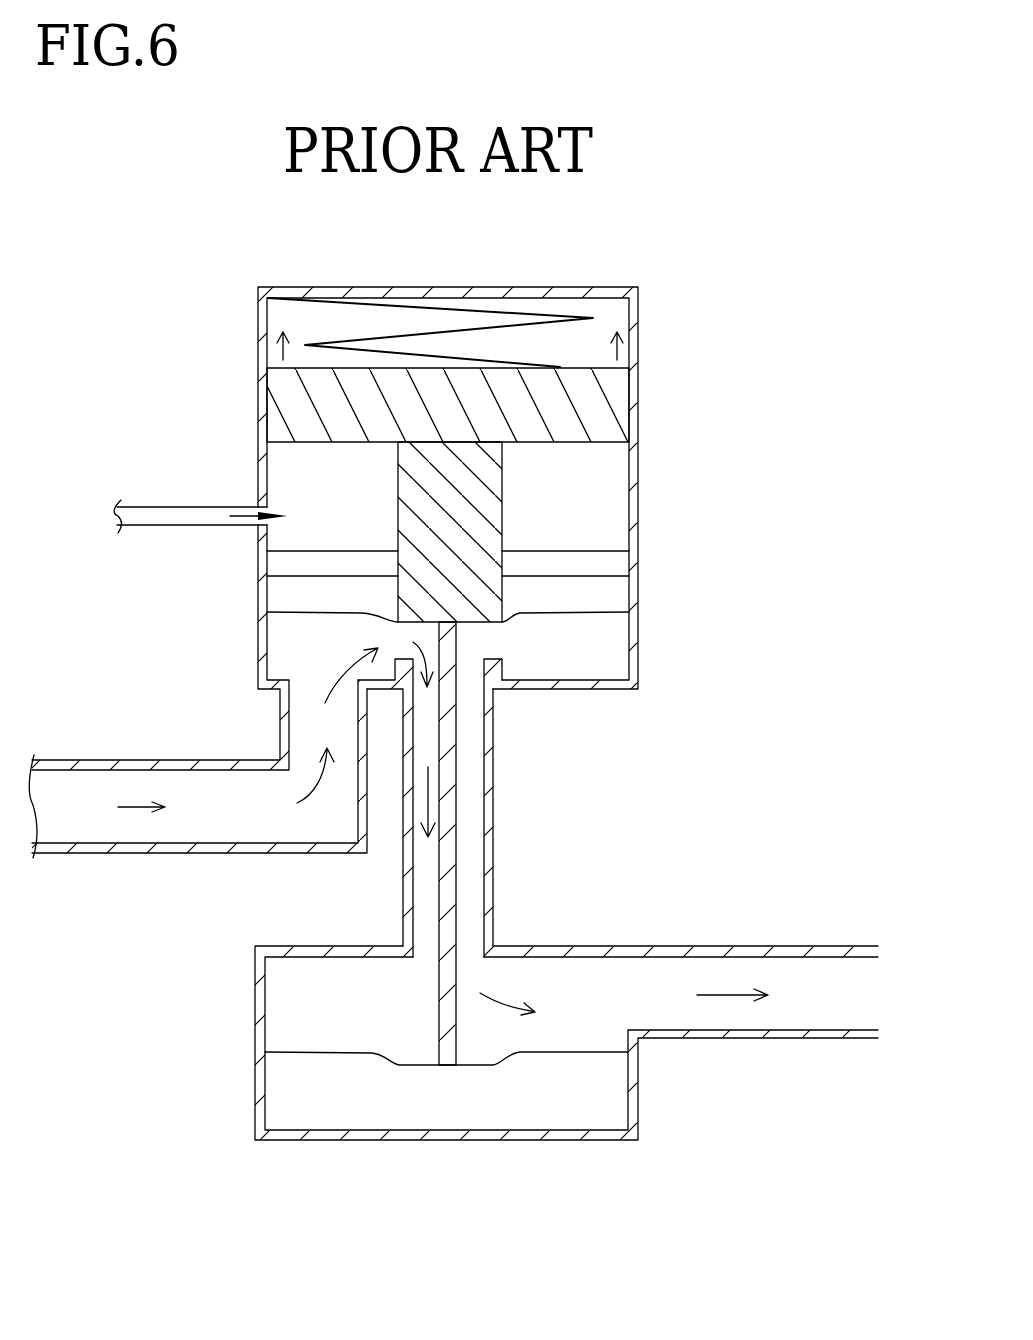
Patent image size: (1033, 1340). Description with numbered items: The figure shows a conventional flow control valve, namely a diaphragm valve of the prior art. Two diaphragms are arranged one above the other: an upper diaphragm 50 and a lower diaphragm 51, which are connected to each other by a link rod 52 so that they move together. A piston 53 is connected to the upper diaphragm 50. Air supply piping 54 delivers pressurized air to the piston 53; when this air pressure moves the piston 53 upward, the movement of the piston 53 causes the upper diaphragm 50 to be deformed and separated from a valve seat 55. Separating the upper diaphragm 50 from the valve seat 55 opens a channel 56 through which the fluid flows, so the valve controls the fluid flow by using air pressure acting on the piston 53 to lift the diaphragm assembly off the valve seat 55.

The upper diaphragm 50 is at (597, 613).
The lower diaphragm 51 is at (580, 1053).
The link rod 52 is at (448, 880).
The piston 53 is at (473, 508).
The air supply piping 54 is at (165, 507).
The valve seat 55 is at (492, 668).
The channel 56 is at (248, 815).